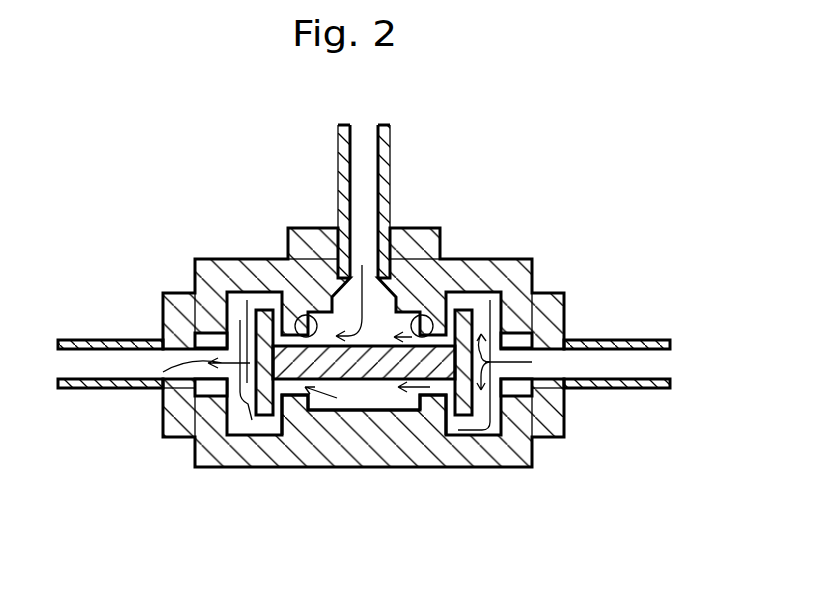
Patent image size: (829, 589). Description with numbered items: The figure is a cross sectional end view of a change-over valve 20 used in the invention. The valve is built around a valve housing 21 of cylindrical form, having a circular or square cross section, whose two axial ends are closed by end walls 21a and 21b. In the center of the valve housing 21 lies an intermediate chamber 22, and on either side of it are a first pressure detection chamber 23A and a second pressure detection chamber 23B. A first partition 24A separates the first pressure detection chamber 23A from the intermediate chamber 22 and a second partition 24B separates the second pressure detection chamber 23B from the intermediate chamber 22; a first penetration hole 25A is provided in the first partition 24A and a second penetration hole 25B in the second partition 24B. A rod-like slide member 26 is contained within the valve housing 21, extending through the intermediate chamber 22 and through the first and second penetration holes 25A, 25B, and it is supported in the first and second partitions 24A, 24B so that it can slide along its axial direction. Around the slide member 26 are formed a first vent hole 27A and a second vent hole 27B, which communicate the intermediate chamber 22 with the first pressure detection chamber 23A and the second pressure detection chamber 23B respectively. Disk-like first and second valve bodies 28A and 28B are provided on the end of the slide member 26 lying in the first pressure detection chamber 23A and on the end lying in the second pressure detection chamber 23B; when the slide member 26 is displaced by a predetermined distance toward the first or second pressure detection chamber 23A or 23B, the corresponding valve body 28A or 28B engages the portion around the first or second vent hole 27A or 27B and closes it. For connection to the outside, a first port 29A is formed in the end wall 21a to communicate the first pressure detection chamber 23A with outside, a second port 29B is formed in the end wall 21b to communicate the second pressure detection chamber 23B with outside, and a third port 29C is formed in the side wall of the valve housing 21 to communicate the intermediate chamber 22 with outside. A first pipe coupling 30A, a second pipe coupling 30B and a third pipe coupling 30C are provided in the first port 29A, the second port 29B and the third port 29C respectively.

The change-over valve 20 is at (384, 329).
The valve housing 21 is at (360, 325).
The end wall 21a is at (193, 292).
The end wall 21b is at (532, 274).
The intermediate chamber 22 is at (387, 421).
The first pressure detection chamber 23A is at (262, 400).
The second pressure detection chamber 23B is at (466, 412).
The first partition 24A is at (287, 413).
The second partition 24B is at (450, 410).
The first penetration hole 25A is at (305, 297).
The second penetration hole 25B is at (428, 328).
The slide member 26 is at (378, 412).
The first vent hole 27A is at (190, 425).
The second vent hole 27B is at (556, 432).
The first valve body 28A is at (240, 318).
The second valve body 28B is at (480, 290).
The first port 29A is at (192, 364).
The second port 29B is at (445, 392).
The third port 29C is at (390, 297).
The first pipe coupling 30A is at (114, 380).
The second pipe coupling 30B is at (643, 338).
The third pipe coupling 30C is at (338, 165).